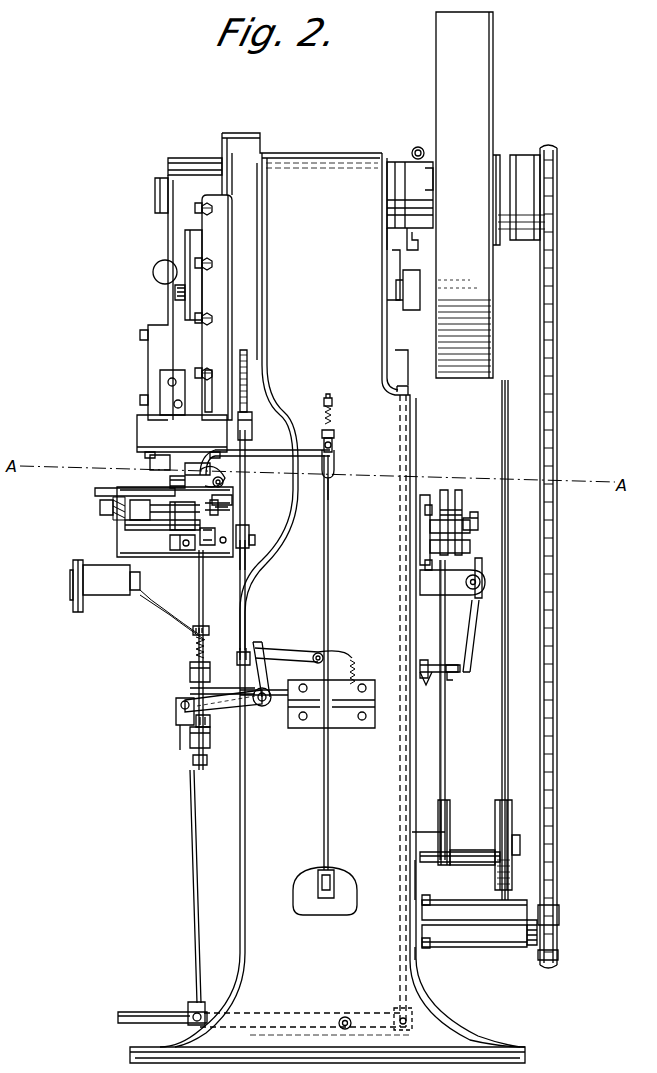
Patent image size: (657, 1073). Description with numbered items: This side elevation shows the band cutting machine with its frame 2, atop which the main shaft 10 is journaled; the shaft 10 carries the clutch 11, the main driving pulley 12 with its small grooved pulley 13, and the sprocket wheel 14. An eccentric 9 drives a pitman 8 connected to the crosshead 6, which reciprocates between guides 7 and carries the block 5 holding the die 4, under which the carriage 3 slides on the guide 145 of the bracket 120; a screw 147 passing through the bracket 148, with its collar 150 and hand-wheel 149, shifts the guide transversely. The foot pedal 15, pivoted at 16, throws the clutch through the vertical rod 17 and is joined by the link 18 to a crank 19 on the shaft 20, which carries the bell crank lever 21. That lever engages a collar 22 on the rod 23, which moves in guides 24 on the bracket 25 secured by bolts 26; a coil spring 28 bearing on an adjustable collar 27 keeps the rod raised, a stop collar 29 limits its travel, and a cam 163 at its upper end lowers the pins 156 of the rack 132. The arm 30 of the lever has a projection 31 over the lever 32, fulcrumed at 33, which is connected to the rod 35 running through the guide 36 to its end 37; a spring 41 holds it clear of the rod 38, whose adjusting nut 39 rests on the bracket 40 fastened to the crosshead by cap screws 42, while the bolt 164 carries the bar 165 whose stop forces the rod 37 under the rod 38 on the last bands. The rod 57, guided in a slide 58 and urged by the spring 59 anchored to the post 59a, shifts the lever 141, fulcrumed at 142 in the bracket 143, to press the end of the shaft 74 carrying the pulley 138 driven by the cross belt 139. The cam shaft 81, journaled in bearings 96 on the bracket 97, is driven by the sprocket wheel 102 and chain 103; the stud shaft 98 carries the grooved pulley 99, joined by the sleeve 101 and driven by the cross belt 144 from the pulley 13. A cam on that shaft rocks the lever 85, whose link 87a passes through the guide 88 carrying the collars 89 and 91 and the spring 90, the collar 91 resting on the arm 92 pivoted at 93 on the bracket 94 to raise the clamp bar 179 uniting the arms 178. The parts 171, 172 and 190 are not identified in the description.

The frame 2 is at (229, 893).
The carriage 3 is at (150, 500).
The die 4 is at (150, 462).
The block 5 is at (137, 431).
The crosshead 6 is at (160, 352).
The guides 7 is at (222, 285).
The pitman 8 is at (175, 300).
The eccentric 9 is at (168, 178).
The main shaft 10 is at (155, 193).
The clutch 11 is at (412, 172).
The main driving pulley 12 is at (488, 58).
The small grooved pulley 13 is at (498, 160).
The sprocket wheel 14 is at (530, 165).
The foot pedal 15 is at (145, 1008).
The pivot 16 is at (345, 1017).
The vertical rod 17 is at (405, 390).
The link 18 is at (190, 825).
The crank 19 is at (185, 698).
The shaft 20 is at (262, 705).
The bell crank lever 21 is at (245, 705).
The collar 22 is at (205, 735).
The rod 23 is at (200, 605).
The guides 24 is at (190, 670).
The bracket 25 is at (303, 722).
The bolts 26 is at (301, 686).
The collar 27 is at (193, 635).
The coil spring 28 is at (195, 652).
The stop collar 29 is at (207, 760).
The arm 30 is at (258, 668).
The projection 31 is at (257, 648).
The lever 32 is at (285, 660).
The fulcrum 33 is at (318, 655).
The rod 35 is at (252, 598).
The guide 36 is at (248, 528).
The rod end 37 is at (248, 514).
The rod 38 is at (248, 447).
The adjusting nut 39 is at (248, 392).
The bracket 40 is at (183, 375).
The spring 41 is at (250, 541).
The cap screws 42 is at (172, 378).
The rod 57 is at (448, 675).
The slide 58 is at (438, 665).
The spring 59 is at (422, 678).
The post 59a is at (448, 665).
The shaft 74 is at (470, 522).
The cam shaft 81 is at (556, 918).
The lever 85 is at (322, 893).
The link 87a is at (330, 803).
The guide 88 is at (334, 431).
The collar 89 is at (336, 403).
The coil spring 90 is at (334, 417).
The collar 91 is at (334, 445).
The arm 92 is at (316, 465).
The pivot 93 is at (228, 480).
The bracket 94 is at (230, 496).
The bearings 96 is at (532, 942).
The bracket 97 is at (425, 833).
The stud shaft 98 is at (515, 845).
The grooved pulley 99 is at (500, 820).
The sleeve 101 is at (475, 857).
The sprocket wheel 102 is at (549, 963).
The chain 103 is at (557, 712).
The bracket 120 is at (170, 612).
The rack bar 132 is at (170, 520).
The pulley 138 is at (452, 503).
The cross belt 139 is at (447, 780).
The lever 141 is at (482, 558).
The fulcrum 142 is at (485, 582).
The bracket 143 is at (438, 597).
The cross belt 144 is at (502, 438).
The guide 145 is at (95, 492).
The screw 147 is at (160, 600).
The bracket 148 is at (100, 592).
The hand-wheel 149 is at (73, 604).
The collar 150 is at (140, 583).
The pins 156 is at (160, 482).
The cam 163 is at (200, 535).
The bolt 164 is at (208, 520).
The bar 165 is at (232, 507).
The nut 171 is at (113, 518).
The spring 172 is at (115, 505).
The arms 178 is at (188, 465).
The clamp bar 179 is at (180, 468).
The rod end 190 is at (446, 828).